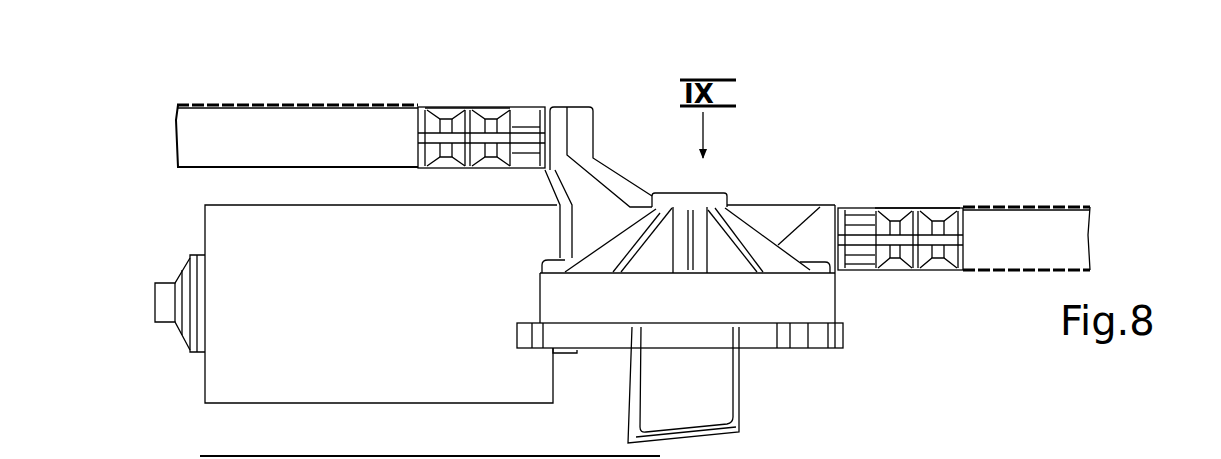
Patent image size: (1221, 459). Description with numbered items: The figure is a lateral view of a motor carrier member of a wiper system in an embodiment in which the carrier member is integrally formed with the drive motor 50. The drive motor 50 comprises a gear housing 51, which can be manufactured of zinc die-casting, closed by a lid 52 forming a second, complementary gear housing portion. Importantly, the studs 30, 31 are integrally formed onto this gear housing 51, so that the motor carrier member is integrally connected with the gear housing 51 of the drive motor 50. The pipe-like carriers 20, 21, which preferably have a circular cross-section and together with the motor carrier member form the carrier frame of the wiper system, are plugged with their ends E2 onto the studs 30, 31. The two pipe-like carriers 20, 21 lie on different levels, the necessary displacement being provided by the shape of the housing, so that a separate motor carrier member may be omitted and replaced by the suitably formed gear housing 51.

The pipe-like carrier 20 is at (293, 122).
The pipe-like carrier 21 is at (1053, 218).
The stud 30 is at (526, 170).
The stud 31 is at (856, 215).
The end of pipe-like carrier E2 is at (440, 183).
The drive motor 50 is at (367, 334).
The gear housing 51 is at (852, 311).
The lid 52 is at (815, 348).